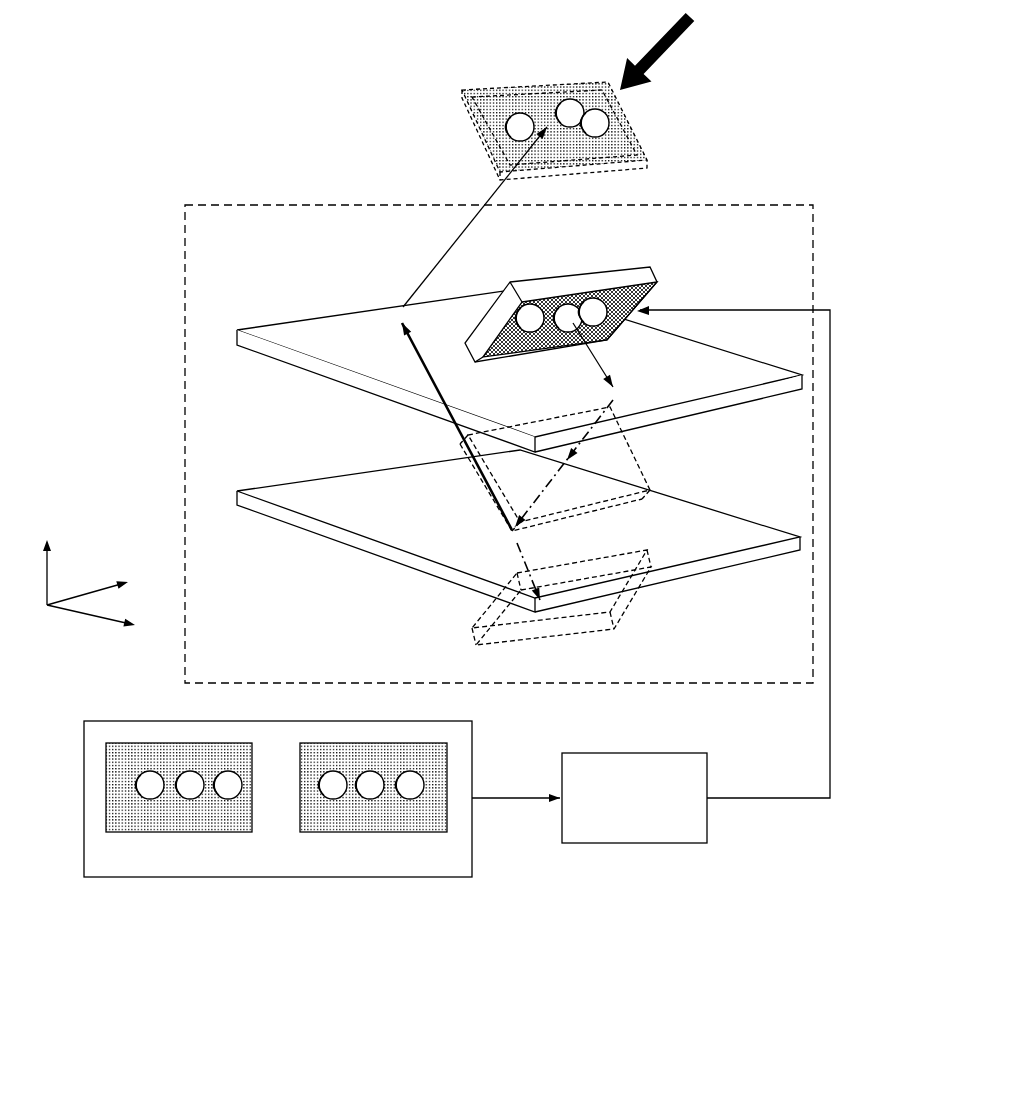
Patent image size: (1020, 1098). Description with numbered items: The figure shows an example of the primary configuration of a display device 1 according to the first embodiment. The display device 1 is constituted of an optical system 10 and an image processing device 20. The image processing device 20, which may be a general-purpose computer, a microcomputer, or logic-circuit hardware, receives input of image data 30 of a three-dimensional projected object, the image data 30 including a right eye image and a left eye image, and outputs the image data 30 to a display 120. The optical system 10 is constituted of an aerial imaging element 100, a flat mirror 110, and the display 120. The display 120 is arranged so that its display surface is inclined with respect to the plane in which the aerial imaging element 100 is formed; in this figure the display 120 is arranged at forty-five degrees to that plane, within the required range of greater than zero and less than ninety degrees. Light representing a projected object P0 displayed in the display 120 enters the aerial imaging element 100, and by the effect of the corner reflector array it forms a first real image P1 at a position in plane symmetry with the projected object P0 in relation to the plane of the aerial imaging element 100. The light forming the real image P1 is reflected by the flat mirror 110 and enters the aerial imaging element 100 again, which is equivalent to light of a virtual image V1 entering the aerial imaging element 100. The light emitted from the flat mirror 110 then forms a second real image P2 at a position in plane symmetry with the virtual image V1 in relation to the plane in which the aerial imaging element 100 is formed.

The display device 1 is at (168, 121).
The optical system 10 is at (491, 405).
The aerial imaging element 100 is at (506, 370).
The flat mirror 110 is at (505, 531).
The display 120 is at (590, 324).
The image processing device 20 is at (651, 574).
The image data 30 is at (278, 783).
The projected object P0 is at (548, 365).
The real image P1 is at (578, 469).
The real image P2 is at (581, 96).
The virtual image V1 is at (536, 611).